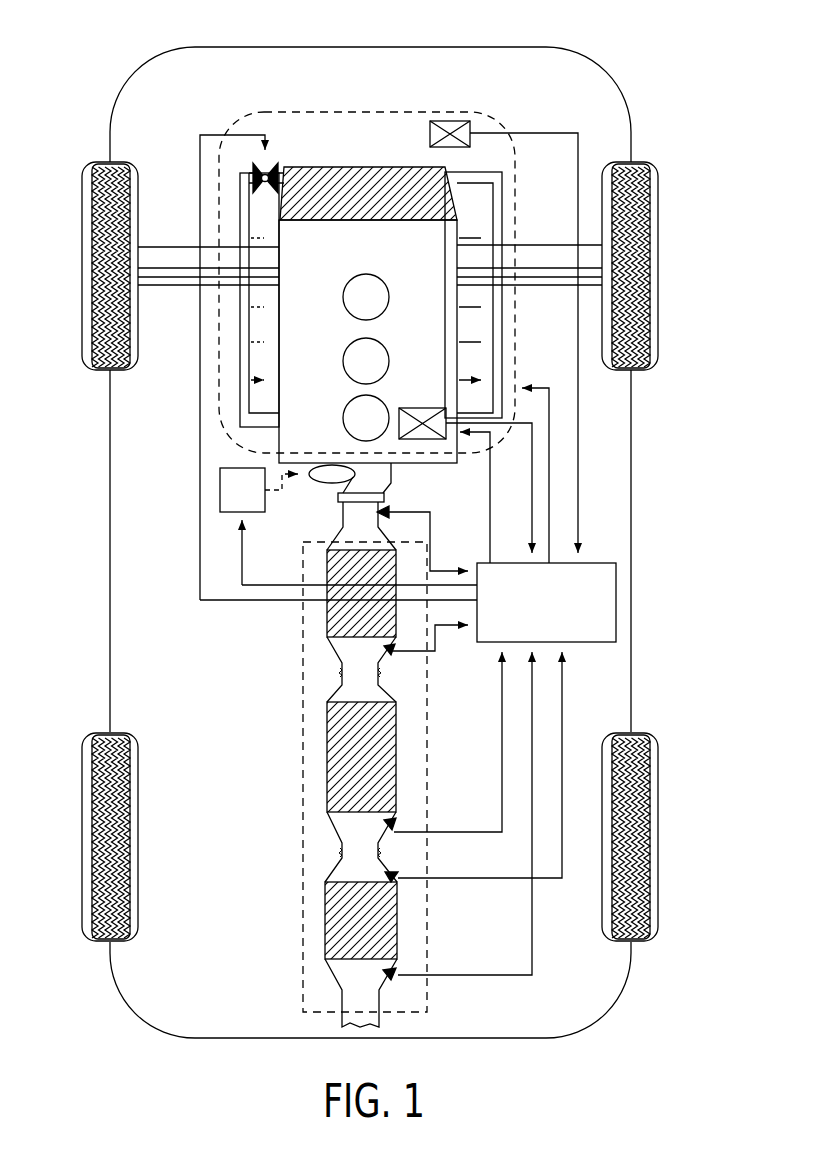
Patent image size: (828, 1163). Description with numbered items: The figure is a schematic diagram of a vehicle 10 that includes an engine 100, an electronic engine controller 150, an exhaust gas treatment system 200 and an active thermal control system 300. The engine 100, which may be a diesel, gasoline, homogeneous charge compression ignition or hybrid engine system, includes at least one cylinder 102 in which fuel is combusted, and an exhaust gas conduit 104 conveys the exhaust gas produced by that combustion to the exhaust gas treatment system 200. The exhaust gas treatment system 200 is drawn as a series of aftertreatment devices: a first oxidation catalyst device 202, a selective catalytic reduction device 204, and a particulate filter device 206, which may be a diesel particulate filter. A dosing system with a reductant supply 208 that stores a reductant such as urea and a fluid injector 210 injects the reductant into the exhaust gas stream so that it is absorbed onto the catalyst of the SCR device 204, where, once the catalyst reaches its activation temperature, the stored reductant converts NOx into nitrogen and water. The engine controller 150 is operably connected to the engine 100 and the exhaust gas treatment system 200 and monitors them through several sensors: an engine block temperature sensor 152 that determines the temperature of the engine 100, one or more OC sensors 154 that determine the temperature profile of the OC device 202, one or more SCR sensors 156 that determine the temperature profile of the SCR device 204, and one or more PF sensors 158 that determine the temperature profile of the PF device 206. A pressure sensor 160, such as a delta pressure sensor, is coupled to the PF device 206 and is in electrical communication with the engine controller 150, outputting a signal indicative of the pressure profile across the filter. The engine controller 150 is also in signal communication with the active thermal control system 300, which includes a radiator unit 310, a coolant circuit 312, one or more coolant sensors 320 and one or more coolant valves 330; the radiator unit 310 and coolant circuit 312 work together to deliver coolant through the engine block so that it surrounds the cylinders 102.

The vehicle 10 is at (130, 84).
The engine 100 is at (296, 245).
The cylinder 102 is at (372, 297).
The exhaust gas conduit 104 is at (372, 470).
The electronic engine controller 150 is at (616, 588).
The engine block temperature sensor 152 is at (430, 408).
The OC sensor 154 is at (392, 513).
The SCR sensor 156 is at (397, 822).
The PF sensor 158 is at (400, 972).
The pressure sensor 160 is at (405, 880).
The exhaust gas treatment system 200 is at (303, 968).
The first oxidation catalyst device 202 is at (340, 615).
The selective catalytic reduction device 204 is at (338, 757).
The particulate filter device 206 is at (337, 895).
The reductant supply 208 is at (220, 492).
The fluid injector 210 is at (332, 465).
The active thermal control system 300 is at (240, 112).
The radiator unit 310 is at (302, 167).
The coolant circuit 312 is at (238, 358).
The coolant sensor 320 is at (449, 121).
The coolant valve 330 is at (270, 160).